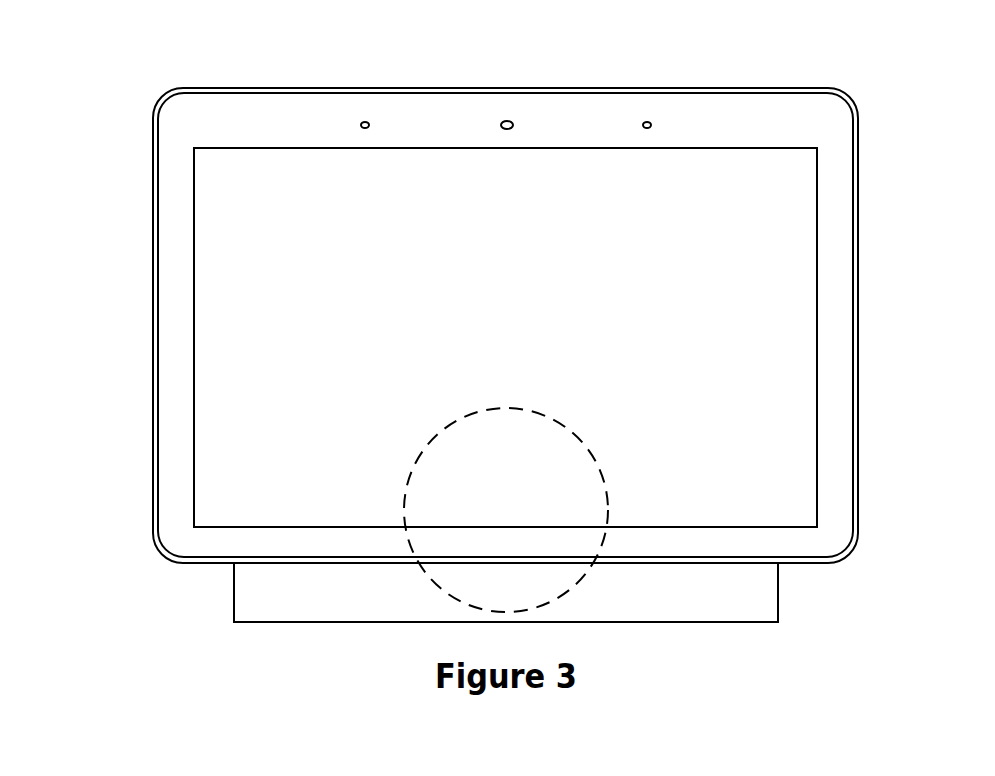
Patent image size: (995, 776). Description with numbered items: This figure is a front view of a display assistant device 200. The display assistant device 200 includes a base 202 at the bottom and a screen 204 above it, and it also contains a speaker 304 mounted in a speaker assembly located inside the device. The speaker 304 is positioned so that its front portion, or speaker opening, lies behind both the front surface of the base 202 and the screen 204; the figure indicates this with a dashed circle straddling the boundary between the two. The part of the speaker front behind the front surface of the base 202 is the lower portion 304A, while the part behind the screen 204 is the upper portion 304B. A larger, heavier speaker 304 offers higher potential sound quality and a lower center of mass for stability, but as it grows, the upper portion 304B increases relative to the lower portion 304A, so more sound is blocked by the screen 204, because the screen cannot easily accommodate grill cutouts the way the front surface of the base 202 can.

The display assistant device 200 is at (147, 73).
The screen 204 is at (154, 338).
The base 202 is at (234, 590).
The speaker 304 is at (466, 414).
The upper portion 304B is at (535, 496).
The lower portion 304A is at (535, 596).